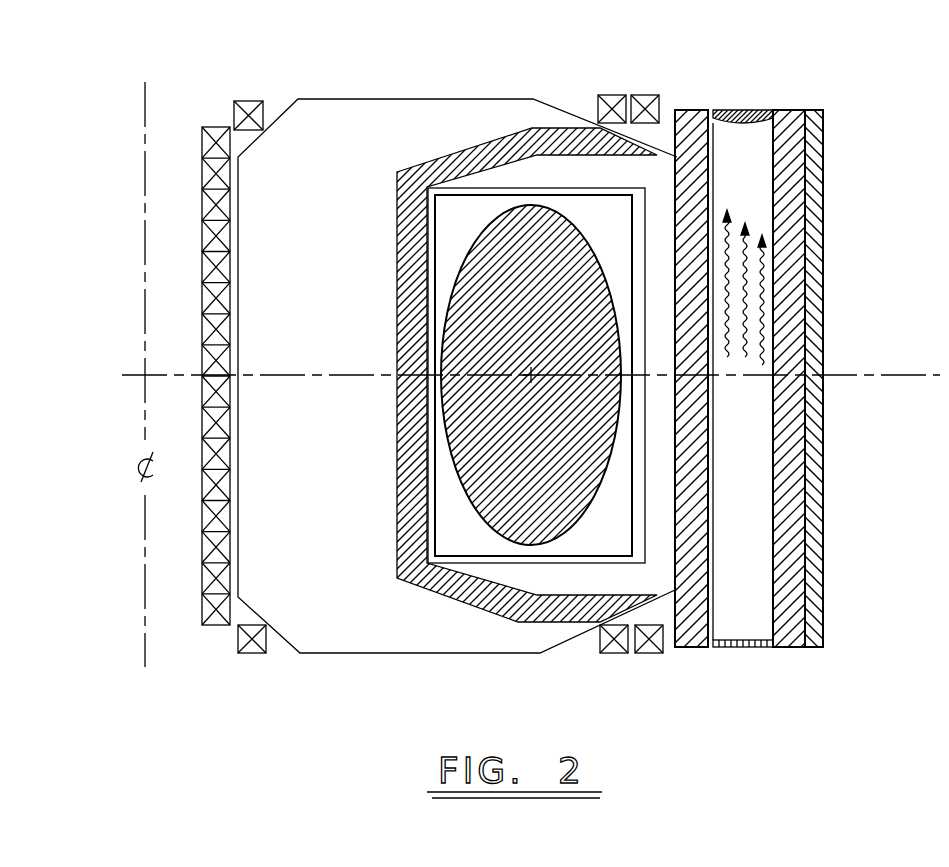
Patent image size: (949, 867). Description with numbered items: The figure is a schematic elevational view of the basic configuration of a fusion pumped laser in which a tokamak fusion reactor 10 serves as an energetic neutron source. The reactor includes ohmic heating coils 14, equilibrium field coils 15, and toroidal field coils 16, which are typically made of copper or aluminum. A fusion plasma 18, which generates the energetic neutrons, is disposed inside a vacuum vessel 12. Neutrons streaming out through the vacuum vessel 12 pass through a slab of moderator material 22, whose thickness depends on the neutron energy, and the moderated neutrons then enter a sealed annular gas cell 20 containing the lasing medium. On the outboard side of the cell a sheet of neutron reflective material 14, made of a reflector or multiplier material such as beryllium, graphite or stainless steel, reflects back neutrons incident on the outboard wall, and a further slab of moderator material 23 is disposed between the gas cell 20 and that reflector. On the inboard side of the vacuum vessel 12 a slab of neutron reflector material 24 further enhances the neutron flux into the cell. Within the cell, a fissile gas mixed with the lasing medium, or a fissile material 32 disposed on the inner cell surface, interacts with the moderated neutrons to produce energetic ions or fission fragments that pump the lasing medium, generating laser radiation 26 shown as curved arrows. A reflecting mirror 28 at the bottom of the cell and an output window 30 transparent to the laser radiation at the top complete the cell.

The tokamak fusion reactor 10 is at (440, 80).
The vacuum vessel 12 is at (557, 559).
The ohmic heating coils 14 is at (236, 101).
The equilibrium field coils 15 is at (645, 93).
The toroidal field coils 16 is at (333, 140).
The fusion plasma 18 is at (522, 232).
The sealed gas cell 20 is at (752, 483).
The slab of moderator material 22 is at (690, 627).
The slab of moderator material 23 is at (798, 190).
The slab of neutron reflector material 24 is at (408, 544).
The laser radiation 26 is at (763, 310).
The reflecting mirror 28 is at (755, 638).
The output window 30 is at (763, 112).
The fissile material 32 is at (707, 603).